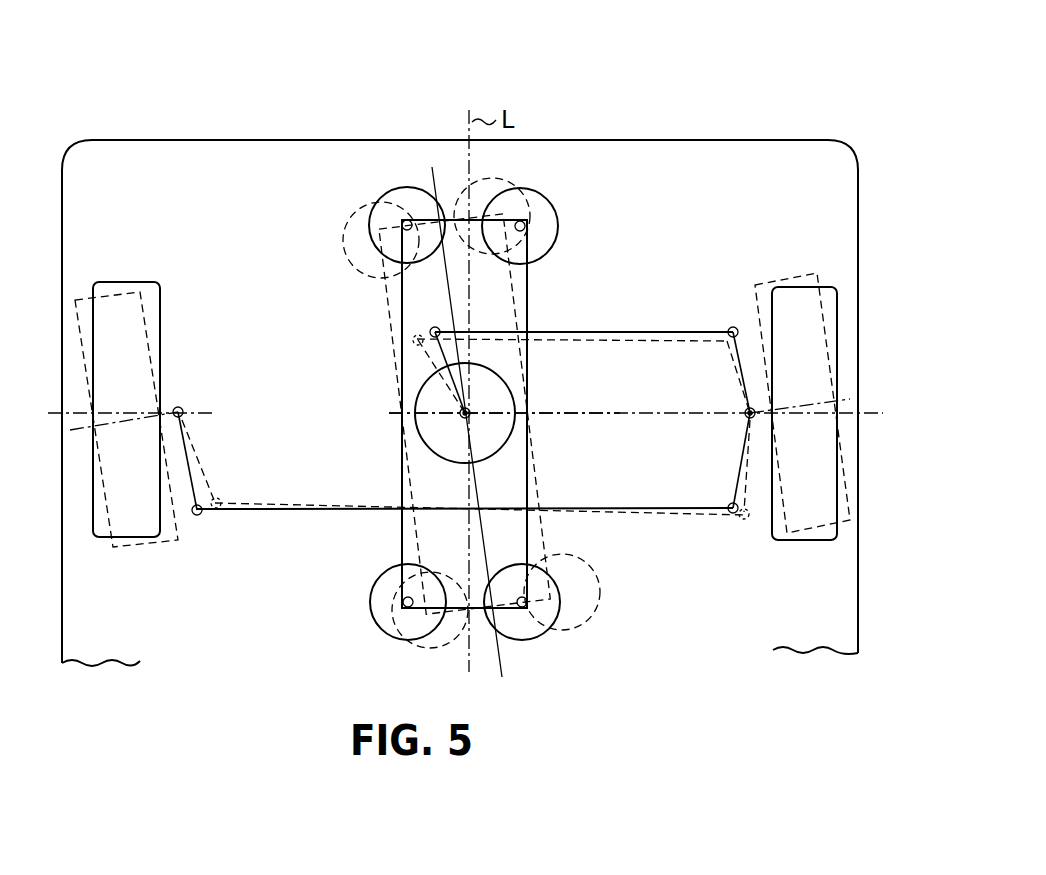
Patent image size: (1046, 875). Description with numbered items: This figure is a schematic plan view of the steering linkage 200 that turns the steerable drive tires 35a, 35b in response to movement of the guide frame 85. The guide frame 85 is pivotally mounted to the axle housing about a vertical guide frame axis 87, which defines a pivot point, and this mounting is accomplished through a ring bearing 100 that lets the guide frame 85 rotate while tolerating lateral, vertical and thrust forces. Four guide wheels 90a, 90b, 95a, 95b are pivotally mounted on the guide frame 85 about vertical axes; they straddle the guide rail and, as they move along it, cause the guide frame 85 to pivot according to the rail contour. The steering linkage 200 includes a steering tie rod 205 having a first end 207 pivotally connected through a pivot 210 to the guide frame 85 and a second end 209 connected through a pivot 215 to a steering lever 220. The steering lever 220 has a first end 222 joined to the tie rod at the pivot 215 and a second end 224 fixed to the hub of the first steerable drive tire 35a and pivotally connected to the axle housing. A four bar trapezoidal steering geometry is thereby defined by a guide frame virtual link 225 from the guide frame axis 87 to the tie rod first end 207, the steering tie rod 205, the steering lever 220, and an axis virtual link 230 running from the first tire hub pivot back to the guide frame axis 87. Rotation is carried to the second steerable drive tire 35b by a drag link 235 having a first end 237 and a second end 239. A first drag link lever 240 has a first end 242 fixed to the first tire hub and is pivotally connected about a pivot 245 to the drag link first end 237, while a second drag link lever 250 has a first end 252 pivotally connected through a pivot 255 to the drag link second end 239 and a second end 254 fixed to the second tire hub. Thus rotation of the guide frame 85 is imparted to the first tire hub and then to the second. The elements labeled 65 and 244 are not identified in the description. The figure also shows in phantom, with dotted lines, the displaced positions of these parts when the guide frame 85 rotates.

The steering linkage 200 is at (652, 123).
The first steerable drive tire 35a is at (810, 300).
The second steerable drive tire 35b is at (148, 312).
The wheel axis 65 is at (62, 413).
The guide frame 85 is at (400, 293).
The guide frame axis 87 is at (458, 410).
The guide wheel 90a is at (540, 632).
The guide wheel 90b is at (392, 630).
The guide wheel 95a is at (548, 214).
The guide wheel 95b is at (368, 212).
The ring bearing 100 is at (418, 378).
The steering tie rod 205 is at (545, 332).
The first end of steering tie rod 207 is at (475, 332).
The second end of steering tie rod 209 is at (715, 332).
The pivot 210 is at (430, 331).
The pivot 215 is at (732, 327).
The steering lever 220 is at (728, 352).
The first end of steering lever 222 is at (742, 340).
The second end of steering lever 224 is at (745, 392).
The guide frame virtual link 225 is at (480, 376).
The axis virtual link 230 is at (620, 414).
The drag link 235 is at (326, 512).
The first end of drag link 237 is at (678, 515).
The second end of drag link 239 is at (222, 512).
The first drag link lever 240 is at (742, 462).
The first end of first drag link lever 242 is at (748, 428).
The steering arm in turned position 244 is at (738, 495).
The pivot 245 is at (733, 515).
The second drag link lever 250 is at (192, 474).
The first end of second drag link lever 252 is at (176, 548).
The second end of second drag link lever 254 is at (178, 407).
The pivot 255 is at (197, 515).